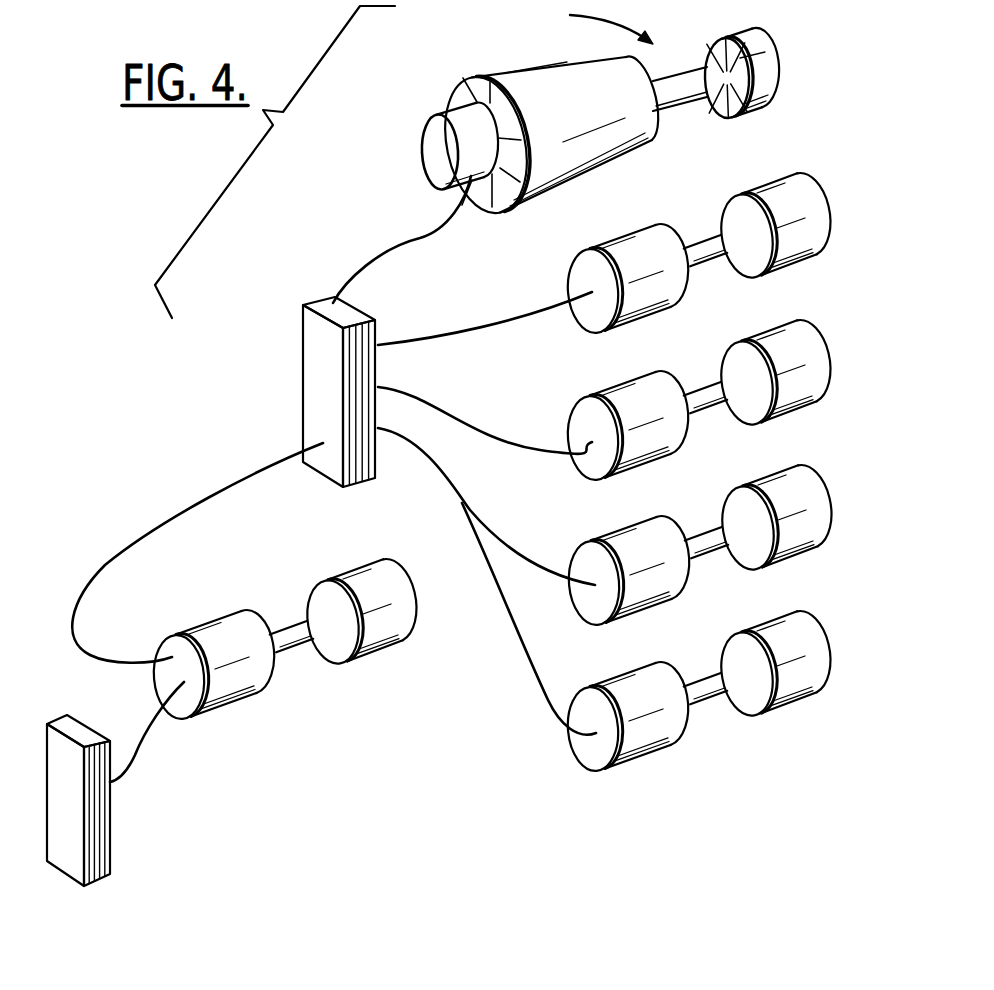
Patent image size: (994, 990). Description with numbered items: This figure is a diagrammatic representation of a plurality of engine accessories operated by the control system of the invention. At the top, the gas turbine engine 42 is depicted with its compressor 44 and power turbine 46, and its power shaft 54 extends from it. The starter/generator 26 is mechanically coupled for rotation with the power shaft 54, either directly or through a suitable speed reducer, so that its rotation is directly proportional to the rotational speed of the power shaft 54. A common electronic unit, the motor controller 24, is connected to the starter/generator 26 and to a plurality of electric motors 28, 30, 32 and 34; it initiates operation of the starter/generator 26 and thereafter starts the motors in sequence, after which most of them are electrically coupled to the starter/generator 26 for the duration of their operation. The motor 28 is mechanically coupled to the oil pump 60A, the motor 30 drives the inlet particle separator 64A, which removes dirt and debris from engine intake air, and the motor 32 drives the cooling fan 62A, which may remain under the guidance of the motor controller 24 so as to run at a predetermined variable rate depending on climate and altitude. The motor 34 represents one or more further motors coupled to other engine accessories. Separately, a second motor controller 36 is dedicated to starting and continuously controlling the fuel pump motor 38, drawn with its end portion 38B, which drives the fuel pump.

The motor controller 24 is at (313, 378).
The starter/generator 26 is at (428, 137).
The electric motor 28 is at (693, 235).
The electric motor 30 is at (697, 383).
The electric motor 32 is at (704, 531).
The electric motor 34 is at (580, 700).
The second motor controller 36 is at (102, 818).
The fuel pump motor 38 is at (283, 636).
The drive unit end portion 38B is at (367, 653).
The gas turbine engine 42 is at (590, 22).
The compressor 44 is at (510, 83).
The power turbine 46 is at (765, 65).
The power shaft 54 is at (680, 95).
The oil pump 60A is at (807, 198).
The cooling fan 62A is at (810, 500).
The inlet particle separator 64A is at (815, 358).